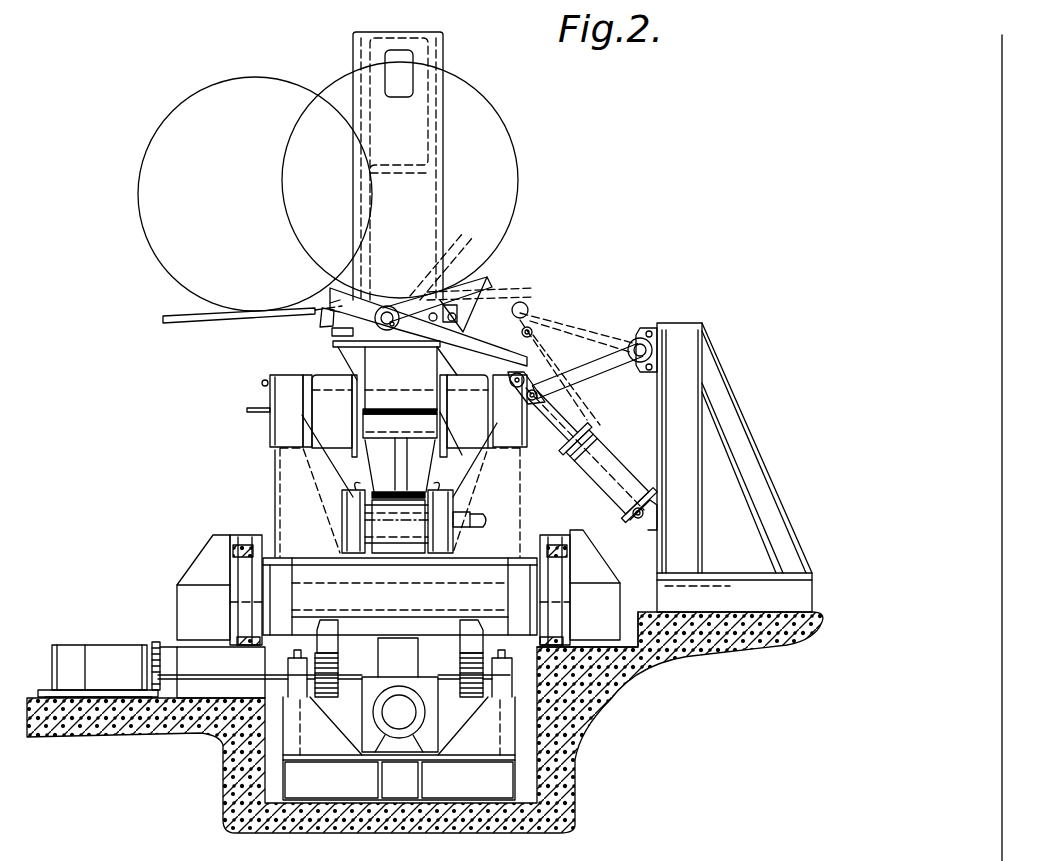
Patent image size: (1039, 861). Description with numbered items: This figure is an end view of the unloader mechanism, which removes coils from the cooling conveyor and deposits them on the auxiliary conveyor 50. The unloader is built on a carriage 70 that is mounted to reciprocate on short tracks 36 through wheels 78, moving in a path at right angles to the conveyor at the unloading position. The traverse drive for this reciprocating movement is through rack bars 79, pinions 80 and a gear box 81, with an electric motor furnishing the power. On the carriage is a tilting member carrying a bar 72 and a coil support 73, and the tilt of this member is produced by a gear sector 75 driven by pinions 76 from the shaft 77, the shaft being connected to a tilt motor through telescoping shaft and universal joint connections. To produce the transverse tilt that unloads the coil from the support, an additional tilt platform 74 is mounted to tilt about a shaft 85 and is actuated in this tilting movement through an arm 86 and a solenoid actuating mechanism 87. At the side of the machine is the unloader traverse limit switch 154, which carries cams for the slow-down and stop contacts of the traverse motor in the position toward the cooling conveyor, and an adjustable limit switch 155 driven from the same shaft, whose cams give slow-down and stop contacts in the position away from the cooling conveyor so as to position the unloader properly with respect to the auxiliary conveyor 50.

The bar 72 is at (432, 124).
The coil support 73 is at (383, 306).
The tilt platform 74 is at (333, 300).
The shaft 85 is at (337, 318).
The auxiliary conveyor 50 is at (196, 320).
The arm 86 is at (520, 300).
The solenoid actuating mechanism 87 is at (598, 455).
The gear sector 75 is at (383, 493).
The pinions 76 is at (380, 512).
The shaft 77 is at (477, 527).
The wheels 78 is at (252, 570).
The carriage 70 is at (493, 563).
The rack bars 79 is at (332, 648).
The pinions 80 is at (330, 693).
The gear box 81 is at (370, 717).
The tracks 36 is at (238, 652).
The unloader traverse limit switch 154 is at (113, 657).
The adjustable limit switch 155 is at (114, 657).